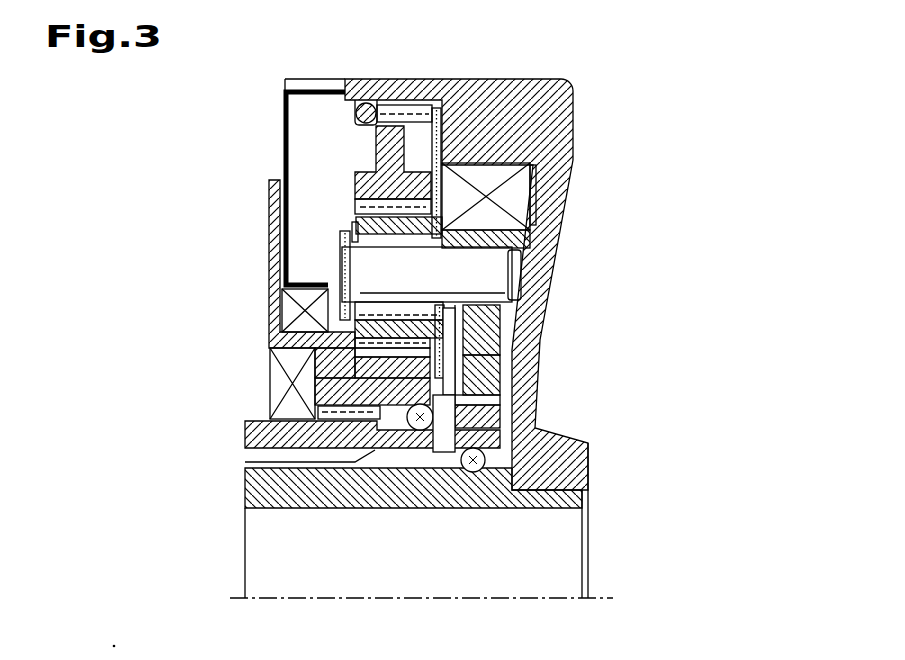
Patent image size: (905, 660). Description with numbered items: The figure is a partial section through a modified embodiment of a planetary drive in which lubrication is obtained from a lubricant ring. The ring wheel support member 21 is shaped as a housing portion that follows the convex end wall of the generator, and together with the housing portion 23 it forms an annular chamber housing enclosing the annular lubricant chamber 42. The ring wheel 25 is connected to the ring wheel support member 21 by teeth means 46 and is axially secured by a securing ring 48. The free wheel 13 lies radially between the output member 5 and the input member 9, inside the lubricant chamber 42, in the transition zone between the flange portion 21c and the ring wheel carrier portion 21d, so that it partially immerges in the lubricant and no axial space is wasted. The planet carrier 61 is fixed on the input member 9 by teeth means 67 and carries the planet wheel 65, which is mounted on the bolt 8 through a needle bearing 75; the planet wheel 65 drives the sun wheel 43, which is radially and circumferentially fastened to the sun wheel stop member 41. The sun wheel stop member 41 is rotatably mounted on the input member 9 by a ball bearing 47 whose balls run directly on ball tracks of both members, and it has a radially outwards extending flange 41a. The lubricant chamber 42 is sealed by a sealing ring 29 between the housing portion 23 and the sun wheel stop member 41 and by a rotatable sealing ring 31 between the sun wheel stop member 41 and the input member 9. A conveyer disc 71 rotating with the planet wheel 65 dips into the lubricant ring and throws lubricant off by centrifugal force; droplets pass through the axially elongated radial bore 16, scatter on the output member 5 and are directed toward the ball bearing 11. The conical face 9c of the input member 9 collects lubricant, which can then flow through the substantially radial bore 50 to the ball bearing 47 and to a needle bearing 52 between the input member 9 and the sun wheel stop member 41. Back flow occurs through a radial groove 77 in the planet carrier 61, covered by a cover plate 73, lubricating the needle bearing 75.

The output member 5 is at (277, 490).
The bolt 8 is at (375, 268).
The input member 9 is at (255, 427).
The conical face 9c is at (245, 457).
The ball bearing 11 is at (476, 472).
The free wheel 13 is at (522, 203).
The axially elongated radial bore 16 is at (445, 440).
The ring wheel support member 21 is at (542, 92).
The flange portion 21c is at (558, 232).
The ring wheel carrier portion 21d is at (368, 87).
The housing portion 23 is at (282, 165).
The ring wheel 25 is at (388, 147).
The sealing ring 29 is at (293, 308).
The rotatable sealing ring 31 is at (287, 353).
The sun wheel stop member 41 is at (497, 402).
The radially outwards extending flange 41a is at (277, 283).
The annular lubricant chamber 42 is at (310, 108).
The sun wheel 43 is at (357, 373).
The teeth means 46 is at (393, 102).
The ball bearing 47 is at (420, 430).
The securing ring 48 is at (354, 134).
The substantially radial bore 50 is at (360, 465).
The needle bearing 52 is at (316, 413).
The planet carrier 61 is at (497, 366).
The planet wheel 65 is at (356, 215).
The teeth means 67 is at (490, 420).
The conveyer disc 71 is at (433, 163).
The cover plate 73 is at (525, 160).
The needle bearing 75 is at (520, 298).
The radial groove 77 is at (505, 335).